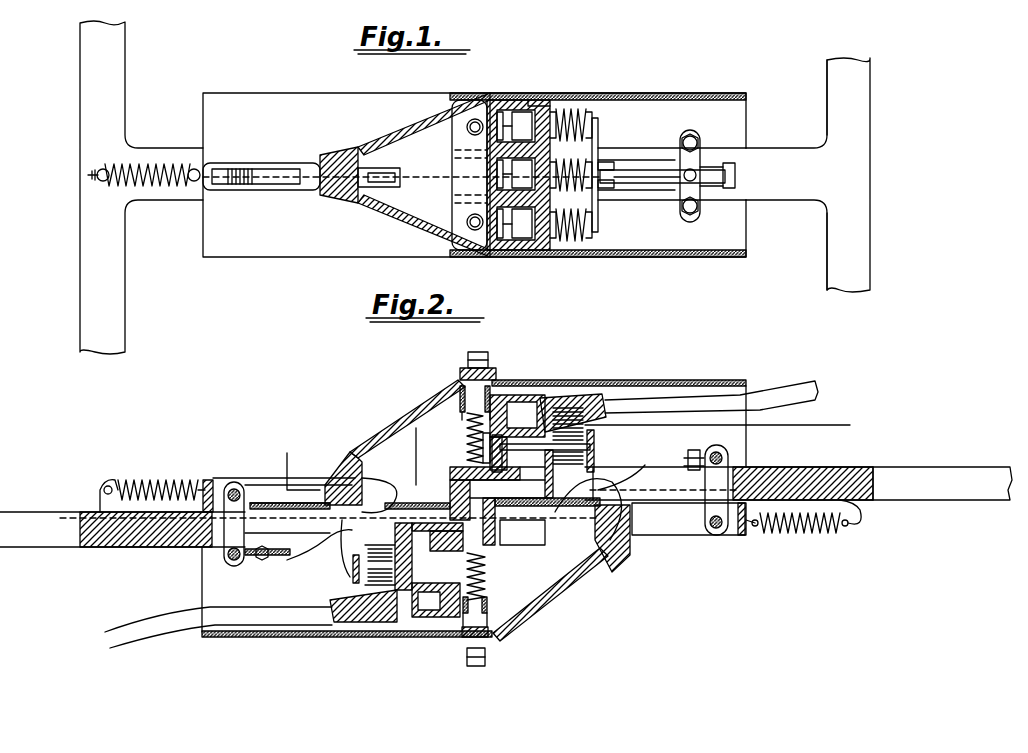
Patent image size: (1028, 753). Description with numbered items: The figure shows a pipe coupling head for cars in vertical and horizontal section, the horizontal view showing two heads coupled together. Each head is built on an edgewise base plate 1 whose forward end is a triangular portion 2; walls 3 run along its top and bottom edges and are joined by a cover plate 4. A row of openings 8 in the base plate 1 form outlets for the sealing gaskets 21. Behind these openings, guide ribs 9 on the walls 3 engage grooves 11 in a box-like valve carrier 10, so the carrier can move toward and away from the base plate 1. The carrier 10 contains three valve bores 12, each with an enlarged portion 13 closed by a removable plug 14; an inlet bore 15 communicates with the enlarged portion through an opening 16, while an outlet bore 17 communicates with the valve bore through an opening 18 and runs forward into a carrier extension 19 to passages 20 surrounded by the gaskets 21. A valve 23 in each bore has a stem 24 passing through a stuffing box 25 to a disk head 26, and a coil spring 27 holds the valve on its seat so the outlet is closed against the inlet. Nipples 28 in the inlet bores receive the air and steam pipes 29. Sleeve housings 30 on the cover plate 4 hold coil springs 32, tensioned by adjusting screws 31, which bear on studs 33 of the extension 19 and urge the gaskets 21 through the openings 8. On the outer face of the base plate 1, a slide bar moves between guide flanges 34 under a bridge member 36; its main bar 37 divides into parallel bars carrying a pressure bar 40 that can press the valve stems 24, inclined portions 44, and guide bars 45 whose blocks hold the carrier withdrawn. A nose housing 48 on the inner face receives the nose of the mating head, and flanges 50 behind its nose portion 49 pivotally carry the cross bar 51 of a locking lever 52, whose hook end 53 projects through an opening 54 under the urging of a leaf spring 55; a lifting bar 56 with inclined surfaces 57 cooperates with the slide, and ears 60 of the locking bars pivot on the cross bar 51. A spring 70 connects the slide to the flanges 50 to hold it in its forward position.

In FIG. 2, the base plate 1 is at (574, 452).
In FIG. 1, the triangular portion 2 is at (395, 212).
In FIG. 1, the walls 3 is at (651, 93).
In FIG. 2, the cover plate 4 is at (650, 380).
In FIG. 2, the openings 8 is at (498, 520).
In FIG. 1, the guide ribs 9 is at (510, 108).
In FIG. 1, the valve carrier 10 is at (556, 100).
In FIG. 1, the grooves 11 is at (540, 100).
In FIG. 2, the valve bore 12 is at (520, 400).
In FIG. 2, the enlarged portion 13 is at (501, 485).
In FIG. 2, the removable plug 14 is at (416, 450).
In FIG. 1, the inlet bore 15 is at (524, 240).
In FIG. 2, the inlet bore 15 is at (545, 398).
In FIG. 1, the opening 16 is at (503, 110).
In FIG. 2, the opening 16 is at (482, 432).
In FIG. 2, the outlet bore 17 is at (540, 545).
In FIG. 2, the opening 18 is at (580, 518).
In FIG. 2, the carrier extension 19 is at (452, 476).
In FIG. 2, the passages 20 is at (452, 492).
In FIG. 2, the sealing gasket 21 is at (372, 488).
In FIG. 1, the valve 23 is at (490, 108).
In FIG. 1, the valve stem 24 is at (469, 175).
In FIG. 2, the stuffing box 25 is at (596, 444).
In FIG. 1, the disk head 26 is at (588, 109).
In FIG. 1, the coil spring 27 is at (588, 236).
In FIG. 2, the nipple 28 is at (560, 392).
In FIG. 2, the air and steam pipes 29 is at (780, 381).
In FIG. 2, the sleeve housing 30 is at (490, 372).
In FIG. 2, the adjusting screw 31 is at (466, 366).
In FIG. 1, the coil spring 32 is at (467, 128).
In FIG. 2, the coil spring 32 is at (462, 414).
In FIG. 2, the stud 33 is at (490, 455).
In FIG. 1, the guide flanges 34 is at (722, 203).
In FIG. 1, the bridge member 36 is at (700, 156).
In FIG. 2, the bridge member 36 is at (705, 462).
In FIG. 1, the main bar 37 is at (153, 158).
In FIG. 1, the pressure bar 40 is at (598, 136).
In FIG. 2, the pressure bar 40 is at (352, 568).
In FIG. 2, the inclined portion 44 is at (660, 472).
In FIG. 1, the guide bars 45 is at (401, 179).
In FIG. 2, the nose housing 48 is at (580, 572).
In FIG. 2, the nose portion 49 is at (628, 530).
In FIG. 1, the flanges 50 is at (276, 190).
In FIG. 2, the flanges 50 is at (700, 536).
In FIG. 1, the cross bar 51 is at (236, 168).
In FIG. 2, the cross bar 51 is at (728, 474).
In FIG. 2, the locking lever 52 is at (668, 498).
In FIG. 1, the hook end 53 is at (387, 173).
In FIG. 2, the hook end 53 is at (372, 486).
In FIG. 2, the opening 54 is at (548, 510).
In FIG. 1, the leaf spring 55 is at (652, 186).
In FIG. 2, the leaf spring 55 is at (650, 470).
In FIG. 1, the lifting bar 56 is at (616, 166).
In FIG. 1, the inclined surface 57 is at (608, 190).
In FIG. 1, the ears 60 is at (735, 180).
In FIG. 1, the spring 70 is at (166, 190).
In FIG. 2, the spring 70 is at (164, 481).